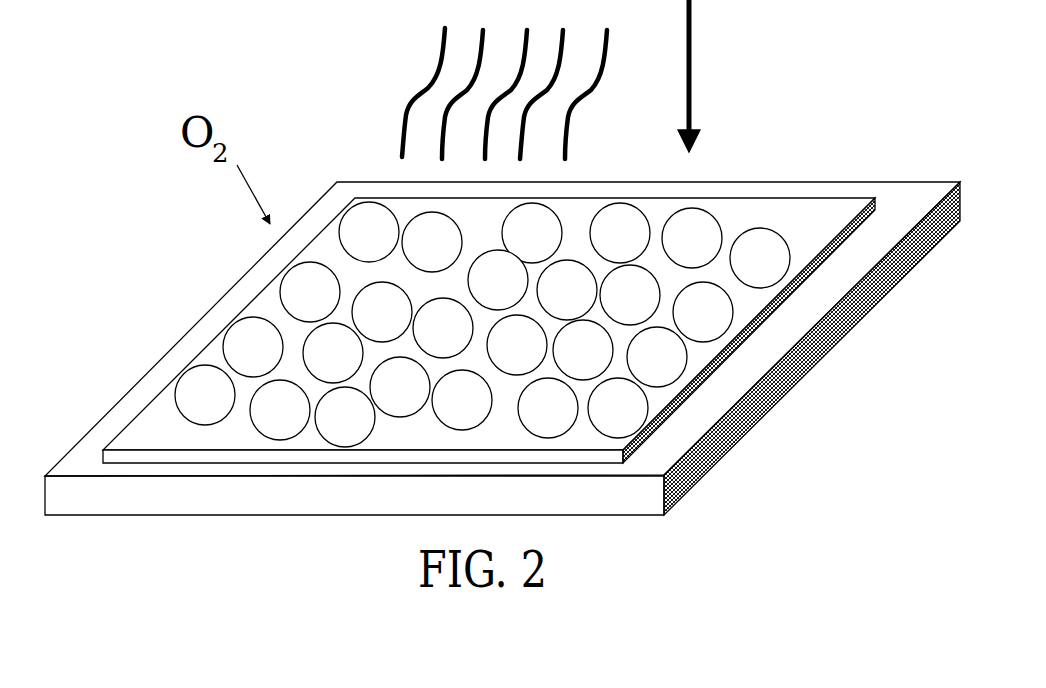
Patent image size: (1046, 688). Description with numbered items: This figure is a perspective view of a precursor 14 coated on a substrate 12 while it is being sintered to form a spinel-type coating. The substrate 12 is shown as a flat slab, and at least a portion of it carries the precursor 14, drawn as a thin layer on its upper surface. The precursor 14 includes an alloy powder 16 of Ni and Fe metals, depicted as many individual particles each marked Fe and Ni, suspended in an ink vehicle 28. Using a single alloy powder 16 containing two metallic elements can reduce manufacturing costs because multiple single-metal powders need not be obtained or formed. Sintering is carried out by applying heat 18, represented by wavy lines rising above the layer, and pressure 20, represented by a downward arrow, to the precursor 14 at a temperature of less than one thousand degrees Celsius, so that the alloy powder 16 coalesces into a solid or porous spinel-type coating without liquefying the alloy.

The substrate 12 is at (123, 420).
The precursor 14 is at (501, 283).
The alloy powder 16 is at (236, 325).
The heat 18 is at (408, 110).
The pressure 20 is at (693, 33).
The ink vehicle 28 is at (750, 305).